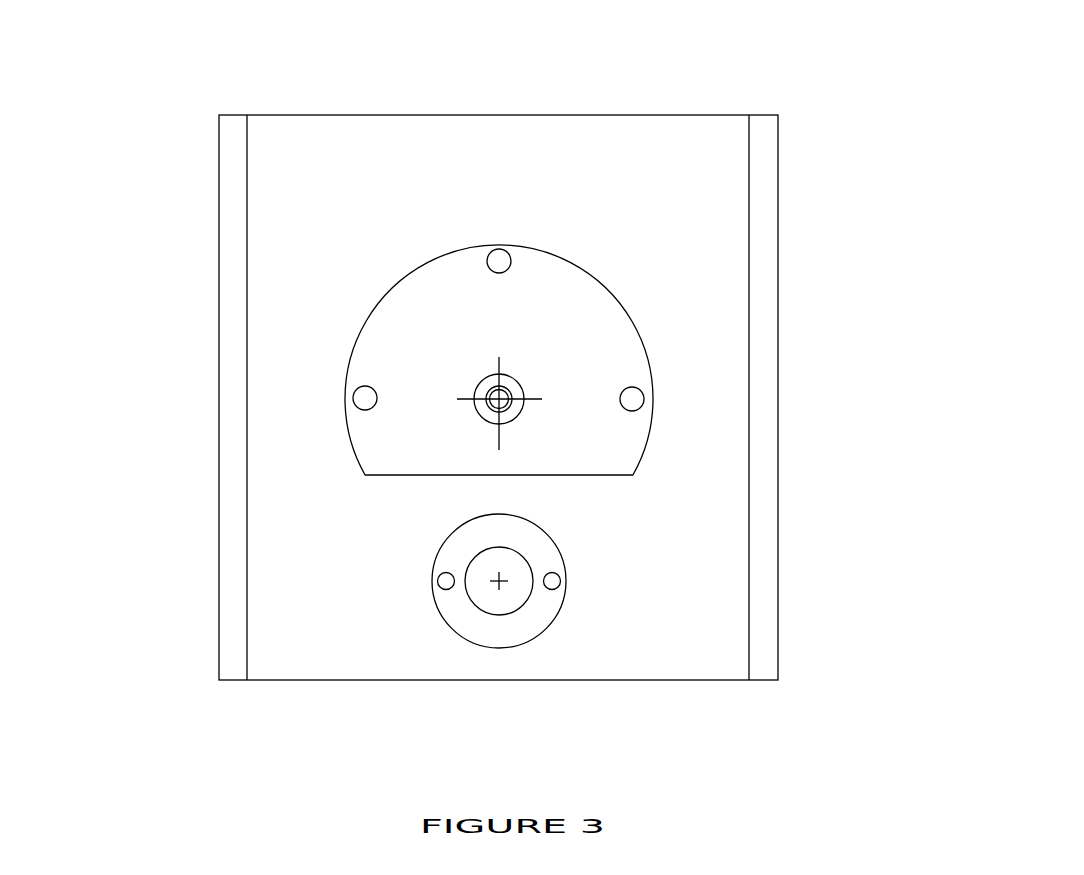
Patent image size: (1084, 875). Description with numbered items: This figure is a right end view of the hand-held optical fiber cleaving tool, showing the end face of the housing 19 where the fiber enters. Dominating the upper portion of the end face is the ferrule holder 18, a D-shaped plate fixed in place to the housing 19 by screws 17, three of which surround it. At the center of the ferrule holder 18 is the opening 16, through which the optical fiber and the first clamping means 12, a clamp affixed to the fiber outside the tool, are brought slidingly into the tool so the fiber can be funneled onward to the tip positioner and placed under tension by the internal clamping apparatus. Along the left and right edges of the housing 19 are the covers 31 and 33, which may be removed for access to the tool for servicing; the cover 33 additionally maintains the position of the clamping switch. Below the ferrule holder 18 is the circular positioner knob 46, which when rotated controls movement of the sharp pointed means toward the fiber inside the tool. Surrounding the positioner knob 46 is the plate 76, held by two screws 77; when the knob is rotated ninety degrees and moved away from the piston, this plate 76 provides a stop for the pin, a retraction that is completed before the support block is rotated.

The first clamping means 12 is at (510, 394).
The opening 16 is at (526, 418).
The screws 17 is at (491, 254).
The ferrule holder 18 is at (410, 302).
The housing 19 is at (660, 143).
The cover 31 is at (232, 370).
The cover 33 is at (766, 180).
The positioner knob 46 is at (504, 609).
The plate 76 is at (546, 551).
The screws 77 is at (440, 584).